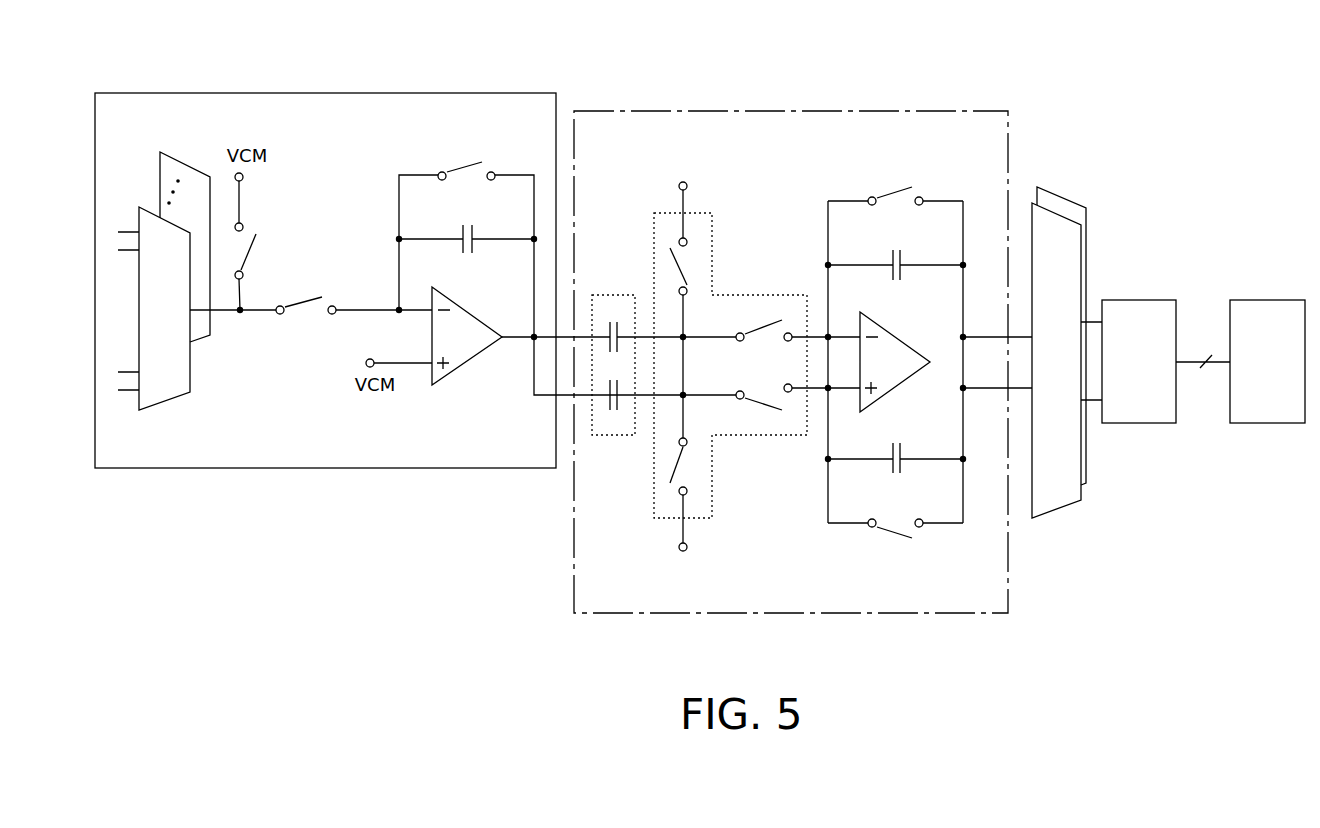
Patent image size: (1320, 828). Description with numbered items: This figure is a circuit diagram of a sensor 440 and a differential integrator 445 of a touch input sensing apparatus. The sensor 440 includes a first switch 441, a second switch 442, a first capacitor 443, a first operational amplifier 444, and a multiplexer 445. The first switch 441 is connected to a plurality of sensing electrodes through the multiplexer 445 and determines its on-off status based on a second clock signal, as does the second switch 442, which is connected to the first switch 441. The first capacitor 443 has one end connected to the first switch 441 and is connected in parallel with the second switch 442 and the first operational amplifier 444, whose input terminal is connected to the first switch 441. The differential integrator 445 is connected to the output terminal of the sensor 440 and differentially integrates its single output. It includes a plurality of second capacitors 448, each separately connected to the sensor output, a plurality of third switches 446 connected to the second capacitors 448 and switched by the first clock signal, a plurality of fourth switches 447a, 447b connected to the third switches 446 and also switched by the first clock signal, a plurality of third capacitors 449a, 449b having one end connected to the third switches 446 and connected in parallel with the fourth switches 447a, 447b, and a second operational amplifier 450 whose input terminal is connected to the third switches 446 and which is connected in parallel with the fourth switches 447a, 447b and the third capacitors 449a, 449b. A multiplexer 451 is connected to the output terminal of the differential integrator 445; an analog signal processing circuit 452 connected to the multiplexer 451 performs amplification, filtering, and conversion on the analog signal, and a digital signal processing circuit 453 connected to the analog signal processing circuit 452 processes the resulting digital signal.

The sensor 440 is at (510, 93).
The first switch 441 is at (311, 318).
The second switch 442 is at (463, 163).
The first capacitor 443 is at (477, 245).
The first operational amplifier 444 is at (470, 366).
The multiplexer / differential integrator 445 is at (170, 149).
The third switches 446 is at (760, 294).
The fourth switch 447a is at (895, 190).
The fourth switch 447b is at (895, 533).
The second capacitors 448 is at (613, 294).
The third capacitor 449a is at (903, 270).
The third capacitor 449b is at (905, 467).
The second operational amplifier 450 is at (888, 395).
The multiplexer 451 is at (1060, 193).
The analog signal processing circuit 452 is at (1140, 300).
The digital signal processing circuit 453 is at (1268, 300).